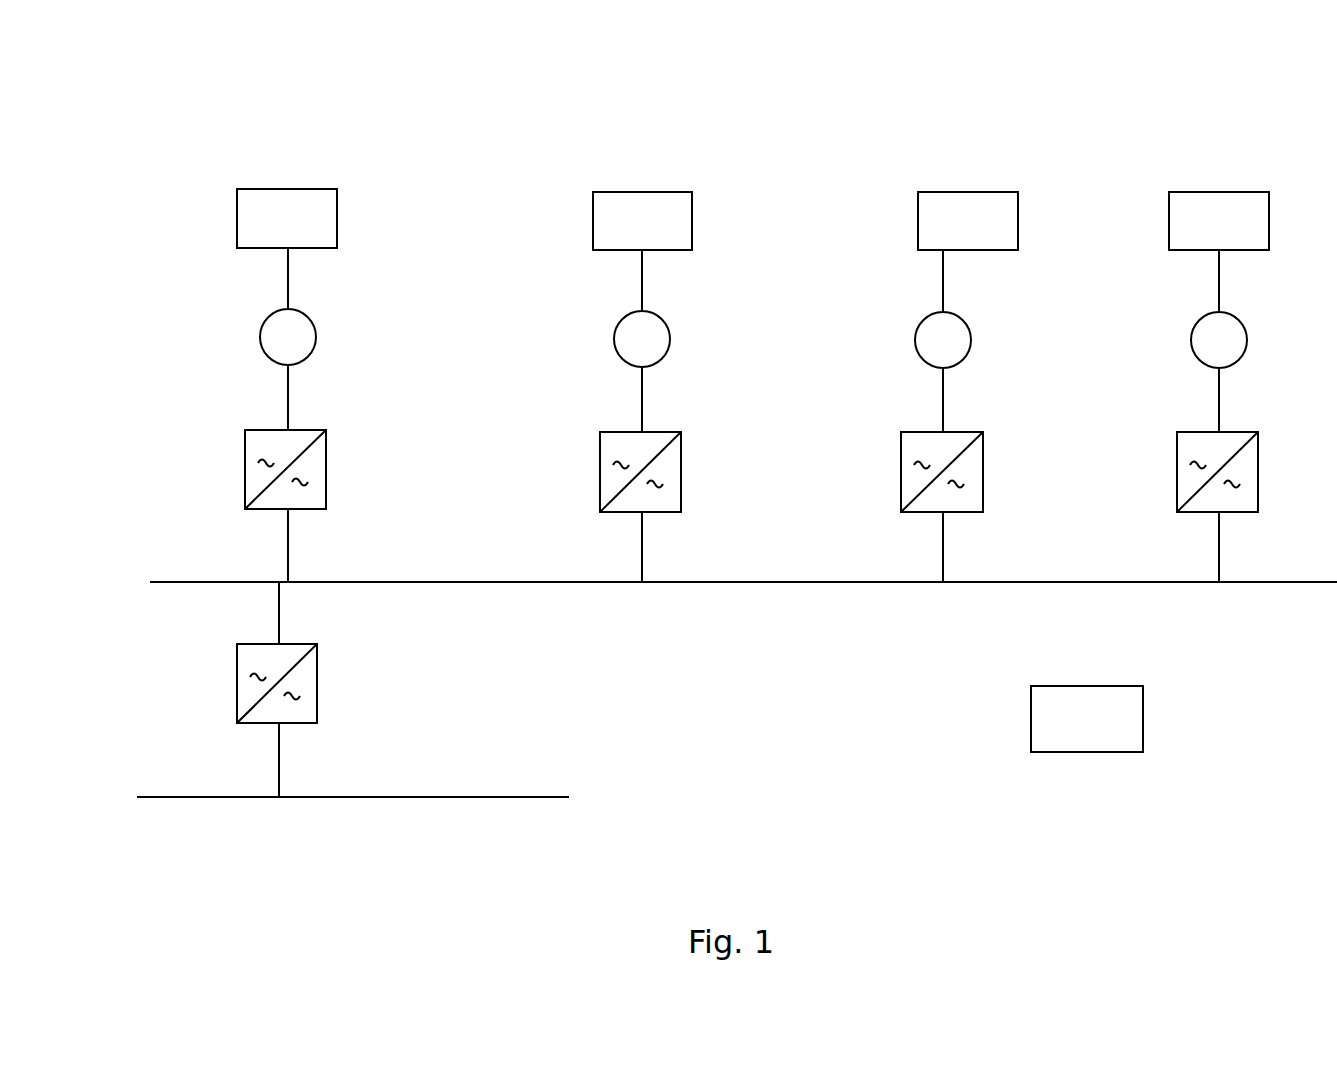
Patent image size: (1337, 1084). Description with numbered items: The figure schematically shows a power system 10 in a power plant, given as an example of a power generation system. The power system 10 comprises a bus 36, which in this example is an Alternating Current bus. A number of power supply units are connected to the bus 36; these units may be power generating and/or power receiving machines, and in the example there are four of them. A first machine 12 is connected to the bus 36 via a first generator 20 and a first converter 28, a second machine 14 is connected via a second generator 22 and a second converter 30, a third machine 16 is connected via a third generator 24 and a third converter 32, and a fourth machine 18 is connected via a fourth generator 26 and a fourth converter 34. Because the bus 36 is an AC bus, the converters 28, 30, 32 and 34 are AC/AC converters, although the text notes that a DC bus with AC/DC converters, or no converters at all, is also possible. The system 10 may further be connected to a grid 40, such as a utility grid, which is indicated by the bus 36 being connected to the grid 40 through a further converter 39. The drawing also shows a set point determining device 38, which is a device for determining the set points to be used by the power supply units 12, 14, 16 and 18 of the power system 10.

The power system 10 is at (350, 133).
The first machine 12 is at (237, 218).
The second machine 14 is at (593, 220).
The third machine 16 is at (918, 220).
The fourth machine 18 is at (1169, 220).
The first generator 20 is at (260, 337).
The second generator 22 is at (614, 339).
The third generator 24 is at (915, 340).
The fourth generator 26 is at (1191, 340).
The first converter 28 is at (248, 466).
The second converter 30 is at (600, 470).
The third converter 32 is at (901, 470).
The fourth converter 34 is at (1177, 466).
The bus 36 is at (1010, 582).
The set point determining device 38 is at (1104, 731).
The further converter 39 is at (240, 680).
The grid 40 is at (498, 797).